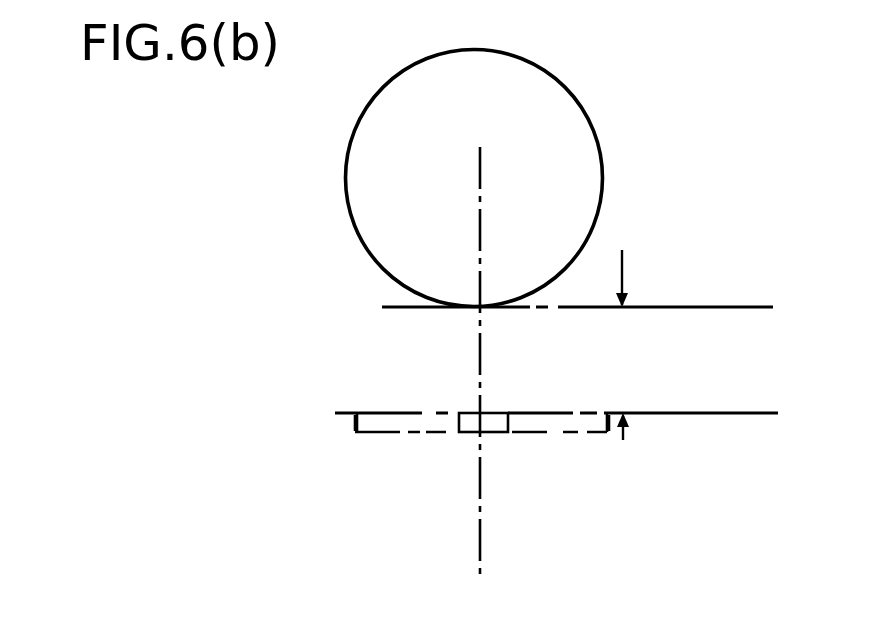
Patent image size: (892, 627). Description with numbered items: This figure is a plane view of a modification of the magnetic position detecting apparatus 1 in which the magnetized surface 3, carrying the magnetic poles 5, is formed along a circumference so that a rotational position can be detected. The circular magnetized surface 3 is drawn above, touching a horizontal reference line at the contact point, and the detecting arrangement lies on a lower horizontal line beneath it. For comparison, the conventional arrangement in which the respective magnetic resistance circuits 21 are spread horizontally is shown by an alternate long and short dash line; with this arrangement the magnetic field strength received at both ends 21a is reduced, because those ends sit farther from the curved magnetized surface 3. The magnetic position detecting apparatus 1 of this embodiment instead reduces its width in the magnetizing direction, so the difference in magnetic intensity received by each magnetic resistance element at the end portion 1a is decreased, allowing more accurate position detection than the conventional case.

The magnetized surface 3 is at (602, 212).
The magnetic pole 5 is at (480, 306).
The magnetic position detecting apparatus 1 is at (498, 434).
The end portion 1a is at (460, 421).
The magnetic resistance circuits 21 is at (588, 433).
The both ends 21a is at (357, 421).